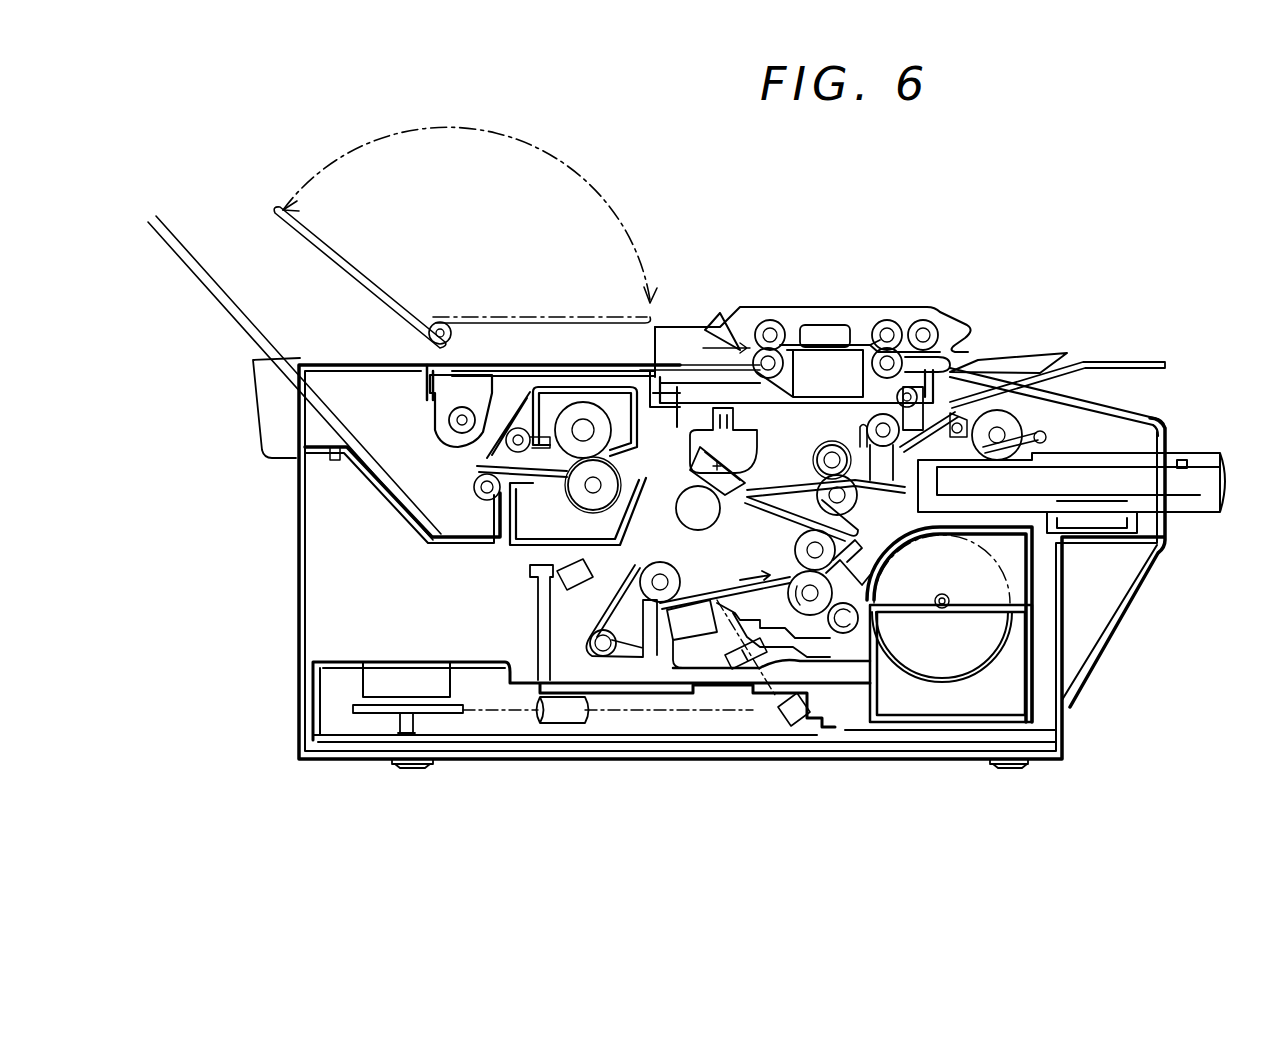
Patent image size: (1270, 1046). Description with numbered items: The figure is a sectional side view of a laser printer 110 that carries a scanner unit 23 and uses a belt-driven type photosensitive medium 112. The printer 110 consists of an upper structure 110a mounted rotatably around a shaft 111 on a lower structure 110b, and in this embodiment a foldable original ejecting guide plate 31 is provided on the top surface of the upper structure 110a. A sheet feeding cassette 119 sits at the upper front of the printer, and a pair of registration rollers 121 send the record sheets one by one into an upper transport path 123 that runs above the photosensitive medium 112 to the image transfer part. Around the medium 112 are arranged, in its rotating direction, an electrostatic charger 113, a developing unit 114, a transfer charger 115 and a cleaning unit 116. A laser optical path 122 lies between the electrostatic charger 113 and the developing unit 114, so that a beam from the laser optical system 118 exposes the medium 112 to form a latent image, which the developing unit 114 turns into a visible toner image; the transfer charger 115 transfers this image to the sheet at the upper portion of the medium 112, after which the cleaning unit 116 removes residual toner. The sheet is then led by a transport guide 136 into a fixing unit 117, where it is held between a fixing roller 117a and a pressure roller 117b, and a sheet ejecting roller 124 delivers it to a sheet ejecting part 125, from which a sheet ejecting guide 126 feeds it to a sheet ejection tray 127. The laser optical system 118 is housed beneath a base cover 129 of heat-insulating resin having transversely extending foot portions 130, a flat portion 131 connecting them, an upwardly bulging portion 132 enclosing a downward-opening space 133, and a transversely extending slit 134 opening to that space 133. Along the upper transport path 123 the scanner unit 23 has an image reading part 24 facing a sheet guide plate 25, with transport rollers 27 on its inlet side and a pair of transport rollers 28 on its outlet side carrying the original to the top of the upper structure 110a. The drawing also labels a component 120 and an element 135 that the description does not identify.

The scanner unit 23 is at (872, 291).
The image reading part 24 is at (825, 385).
The sheet guide plate 25 is at (820, 325).
The transport rollers 27 is at (888, 321).
The pair of transport rollers 28 is at (772, 320).
The foldable original ejecting guide plate 31 is at (330, 272).
The laser printer 110 is at (848, 383).
The upper structure 110a is at (686, 370).
The lower structure 110b is at (1057, 583).
The shaft 111 is at (449, 420).
The belt-driven type photosensitive medium 112 is at (733, 495).
The electrostatic charger 113 is at (692, 640).
The developing unit 114 is at (1028, 603).
The transfer charger 115 is at (747, 447).
The cleaning unit 116 is at (640, 652).
The fixing unit 117 is at (580, 394).
The fixing roller 117a is at (545, 466).
The pressure roller 117b is at (595, 410).
The laser optical system 118 is at (477, 731).
The sheet feeding cassette 119 is at (1193, 512).
The exit roller 120 is at (993, 410).
The registration rollers 121 is at (850, 478).
The laser optical path 122 is at (808, 662).
The upper transport path 123 is at (775, 430).
The sheet ejecting roller 124 is at (477, 470).
The sheet ejecting part 125 is at (385, 403).
The sheet ejecting guide 126 is at (373, 462).
The sheet ejection tray 127 is at (229, 306).
The base cover 129 is at (312, 672).
The foot portions 130 is at (409, 768).
The flat portion 131 is at (926, 742).
The upwardly bulging portion 132 is at (432, 660).
The space 133 is at (476, 695).
The slit 134 is at (763, 673).
The roller 135 is at (601, 744).
The transport guide 136 is at (662, 455).